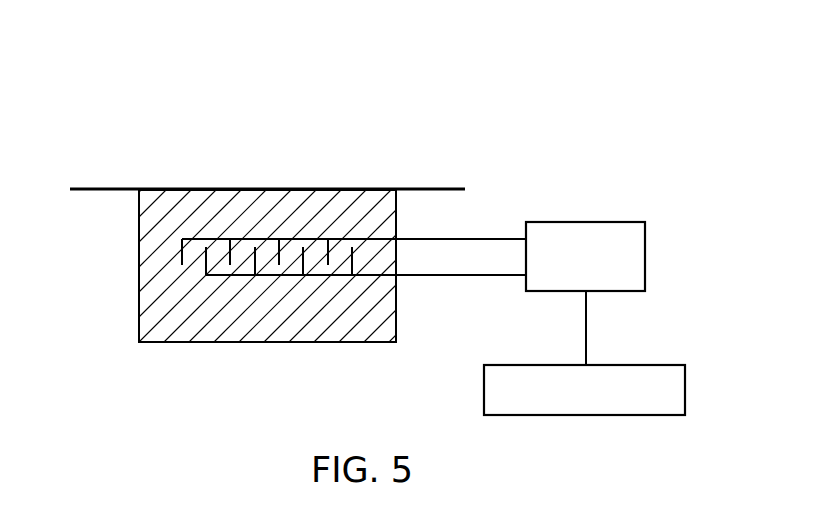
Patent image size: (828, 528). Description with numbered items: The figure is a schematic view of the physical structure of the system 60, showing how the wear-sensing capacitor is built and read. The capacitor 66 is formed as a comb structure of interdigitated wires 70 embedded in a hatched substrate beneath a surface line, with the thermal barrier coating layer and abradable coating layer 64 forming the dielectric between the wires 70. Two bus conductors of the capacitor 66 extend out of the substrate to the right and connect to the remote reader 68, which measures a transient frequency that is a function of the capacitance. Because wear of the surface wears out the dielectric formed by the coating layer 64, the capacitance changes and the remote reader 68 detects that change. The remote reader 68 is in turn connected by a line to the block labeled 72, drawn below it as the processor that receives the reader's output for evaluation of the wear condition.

The system 60 is at (600, 57).
The thermal barrier coating layer and abradable coating layer 64 is at (260, 239).
The capacitor 66 is at (373, 275).
The remote reader 68 is at (646, 255).
The wires 70 is at (289, 250).
The processor 72 is at (549, 364).